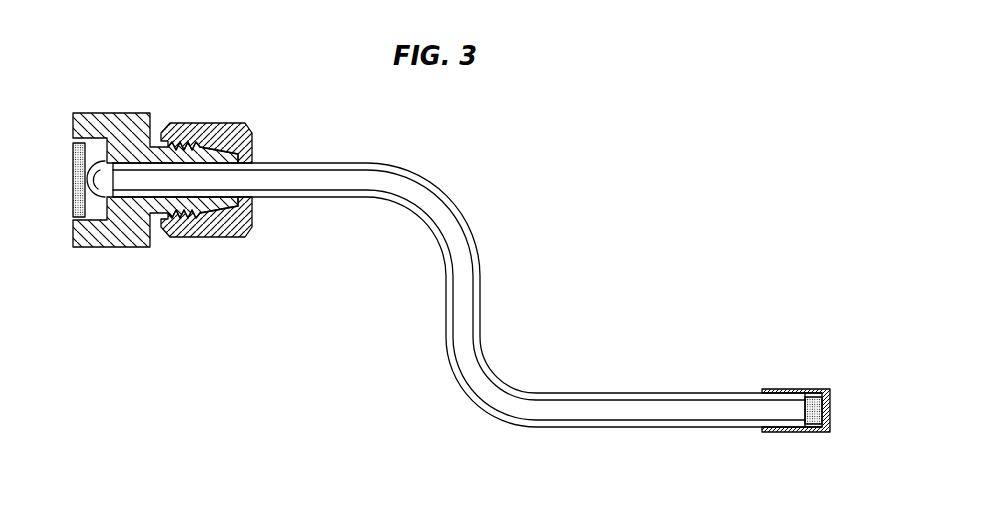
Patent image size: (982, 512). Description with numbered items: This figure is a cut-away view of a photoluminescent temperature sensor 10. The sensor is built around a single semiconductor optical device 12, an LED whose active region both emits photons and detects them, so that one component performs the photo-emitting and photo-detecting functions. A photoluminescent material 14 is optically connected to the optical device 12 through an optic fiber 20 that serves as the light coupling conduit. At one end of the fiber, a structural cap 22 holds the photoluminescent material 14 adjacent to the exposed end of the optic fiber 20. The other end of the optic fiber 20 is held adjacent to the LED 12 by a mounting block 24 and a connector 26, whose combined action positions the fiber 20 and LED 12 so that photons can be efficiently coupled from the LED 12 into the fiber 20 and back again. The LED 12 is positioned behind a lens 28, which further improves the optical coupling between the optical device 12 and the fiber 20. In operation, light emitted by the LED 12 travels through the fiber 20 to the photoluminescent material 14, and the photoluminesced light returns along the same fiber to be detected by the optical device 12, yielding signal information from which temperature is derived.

The photoluminescent temperature sensor 10 is at (562, 165).
The semiconductor optical device 12 is at (72, 170).
The photoluminescent material 14 is at (829, 410).
The optic fiber 20 is at (598, 393).
The structural cap 22 is at (787, 390).
The mounting block 24 is at (112, 113).
The connector 26 is at (215, 122).
The lens 28 is at (88, 194).